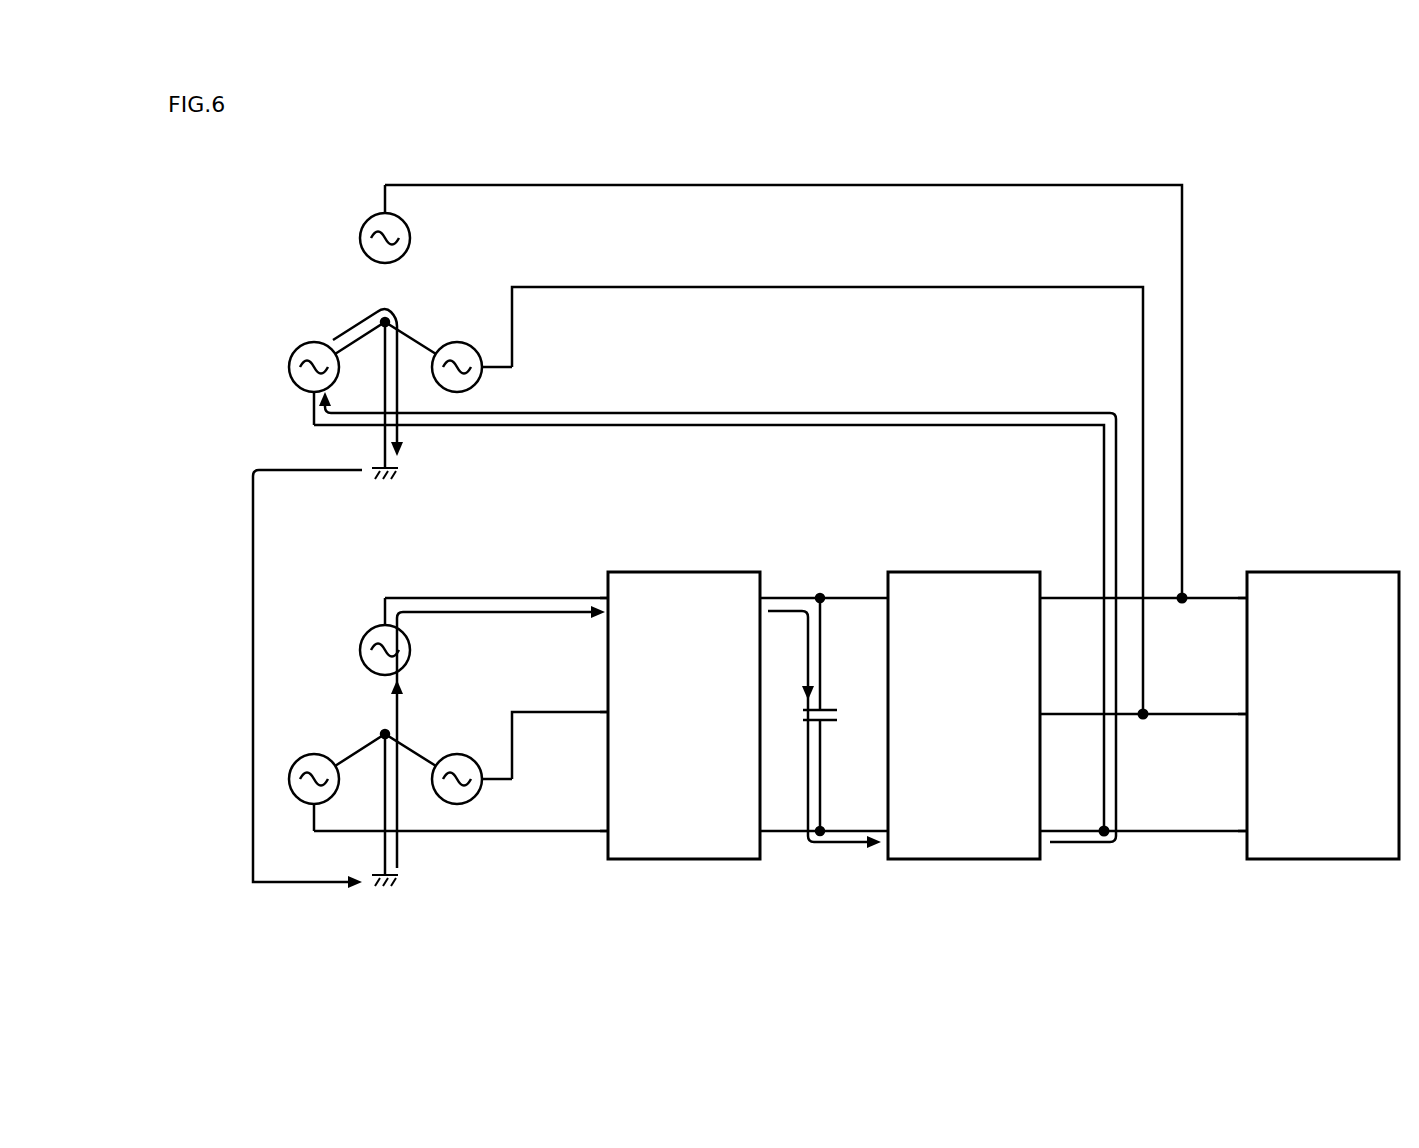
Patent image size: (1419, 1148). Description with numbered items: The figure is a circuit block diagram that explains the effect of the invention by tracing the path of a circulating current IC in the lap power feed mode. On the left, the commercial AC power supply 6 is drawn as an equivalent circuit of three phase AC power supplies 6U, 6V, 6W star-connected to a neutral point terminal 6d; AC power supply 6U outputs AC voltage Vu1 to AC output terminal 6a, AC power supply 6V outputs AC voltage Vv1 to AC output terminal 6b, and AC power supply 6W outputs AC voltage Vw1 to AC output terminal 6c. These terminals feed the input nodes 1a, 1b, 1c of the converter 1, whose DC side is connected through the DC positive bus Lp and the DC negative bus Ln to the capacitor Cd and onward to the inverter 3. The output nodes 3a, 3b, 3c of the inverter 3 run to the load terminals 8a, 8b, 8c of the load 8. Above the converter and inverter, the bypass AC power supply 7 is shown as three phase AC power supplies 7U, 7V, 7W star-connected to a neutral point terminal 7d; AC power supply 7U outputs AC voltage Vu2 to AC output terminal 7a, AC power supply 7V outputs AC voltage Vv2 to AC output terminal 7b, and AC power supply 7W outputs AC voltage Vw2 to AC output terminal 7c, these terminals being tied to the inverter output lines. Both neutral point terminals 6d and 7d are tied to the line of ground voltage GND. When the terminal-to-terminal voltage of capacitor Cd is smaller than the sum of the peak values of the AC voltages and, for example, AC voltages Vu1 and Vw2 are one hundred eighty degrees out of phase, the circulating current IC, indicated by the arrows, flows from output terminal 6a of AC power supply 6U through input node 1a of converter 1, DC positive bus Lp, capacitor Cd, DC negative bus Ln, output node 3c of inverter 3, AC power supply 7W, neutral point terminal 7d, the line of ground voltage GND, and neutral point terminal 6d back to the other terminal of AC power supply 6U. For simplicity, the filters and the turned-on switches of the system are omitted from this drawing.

The converter 1 is at (729, 572).
The input node of converter 1a is at (600, 598).
The input node of converter 1b is at (600, 712).
The input node of converter 1c is at (600, 831).
The inverter 3 is at (1009, 572).
The output node of inverter 3a is at (1049, 597).
The output node of inverter 3b is at (1049, 713).
The output node of inverter 3c is at (1049, 830).
The commercial AC power supply 6 is at (311, 589).
The AC output terminal 6a is at (380, 627).
The AC output terminal 6b is at (483, 784).
The AC output terminal 6c is at (311, 806).
The neutral point terminal 6d is at (385, 853).
The AC power supply 6U is at (410, 650).
The AC power supply 6V is at (455, 754).
The AC power supply 6W is at (312, 754).
The bypass AC power supply 7 is at (311, 177).
The AC output terminal 7a is at (380, 214).
The AC output terminal 7b is at (483, 372).
The AC output terminal 7c is at (311, 396).
The neutral point terminal 7d is at (385, 441).
The AC power supply 7U is at (410, 238).
The AC power supply 7V is at (455, 342).
The AC power supply 7W is at (312, 342).
The load 8 is at (1368, 572).
The load terminal 8a is at (1245, 597).
The load terminal 8b is at (1245, 713).
The load terminal 8c is at (1245, 830).
The circulating current IC is at (253, 677).
The ground voltage GND is at (372, 490).
The capacitor Cd is at (836, 705).
The DC positive bus Lp is at (783, 598).
The DC negative bus Ln is at (785, 831).
The AC voltage Vu1 is at (530, 598).
The AC voltage Vv1 is at (530, 712).
The AC voltage Vw1 is at (530, 831).
The AC voltage Vu2 is at (545, 185).
The AC voltage Vv2 is at (545, 287).
The AC voltage Vw2 is at (545, 425).